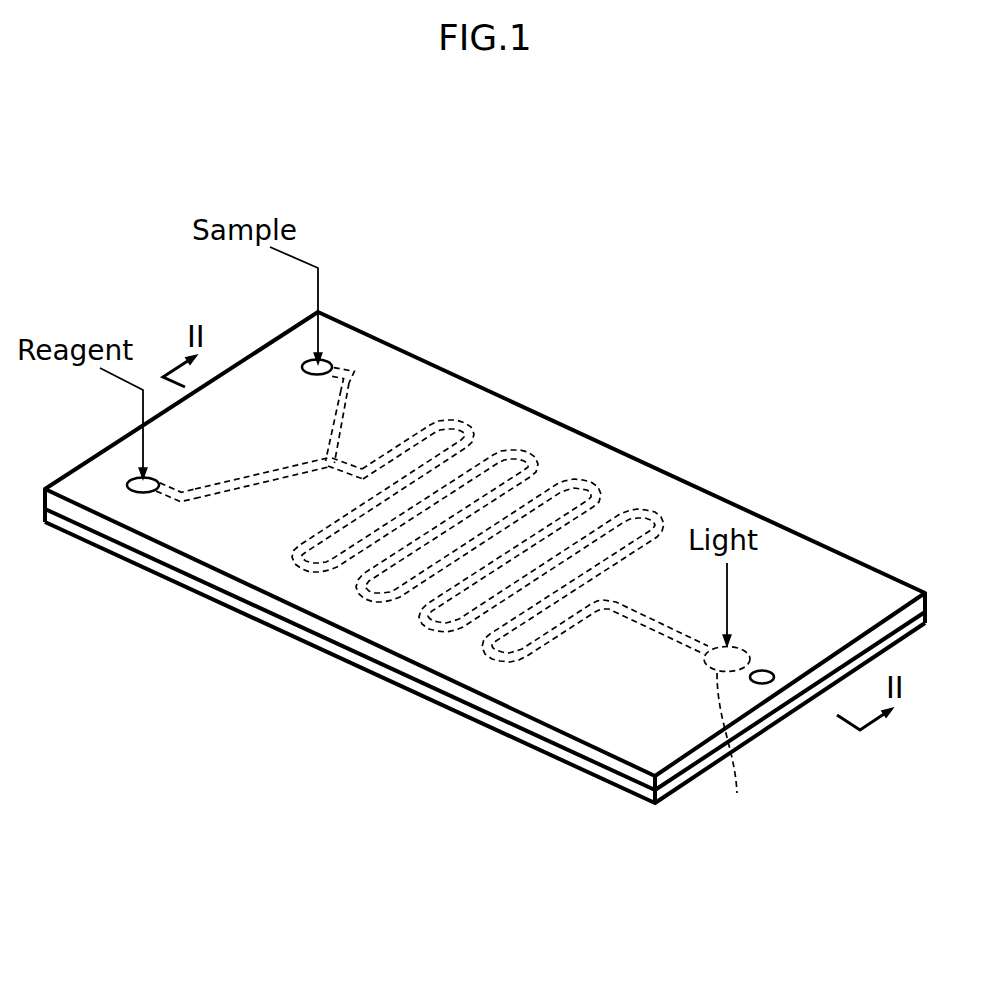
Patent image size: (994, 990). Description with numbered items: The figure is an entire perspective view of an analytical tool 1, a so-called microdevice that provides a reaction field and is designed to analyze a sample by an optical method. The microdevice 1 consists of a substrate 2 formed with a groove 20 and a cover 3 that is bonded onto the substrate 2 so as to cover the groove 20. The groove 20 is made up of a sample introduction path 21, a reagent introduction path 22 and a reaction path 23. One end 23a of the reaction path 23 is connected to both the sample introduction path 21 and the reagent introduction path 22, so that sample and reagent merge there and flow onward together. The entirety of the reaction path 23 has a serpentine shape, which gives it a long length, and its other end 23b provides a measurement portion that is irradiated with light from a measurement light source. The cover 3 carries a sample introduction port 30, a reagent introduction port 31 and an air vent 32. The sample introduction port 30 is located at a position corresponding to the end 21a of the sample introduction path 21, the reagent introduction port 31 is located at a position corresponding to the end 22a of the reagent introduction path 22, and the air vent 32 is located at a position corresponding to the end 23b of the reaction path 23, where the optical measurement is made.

The analytical tool 1 is at (684, 430).
The substrate 2 is at (518, 750).
The cover 3 is at (808, 558).
The groove 20 is at (491, 443).
The sample introduction path 21 is at (356, 391).
The end of sample introduction path 21a is at (337, 374).
The reagent introduction path 22 is at (225, 497).
The end of reagent introduction path 22a is at (160, 484).
The reaction path 23 is at (428, 636).
The end of reaction path 23a is at (348, 450).
The another end of reaction path 23b is at (742, 737).
The sample introduction port 30 is at (327, 362).
The reagent introduction port 31 is at (143, 493).
The air vent 32 is at (768, 673).